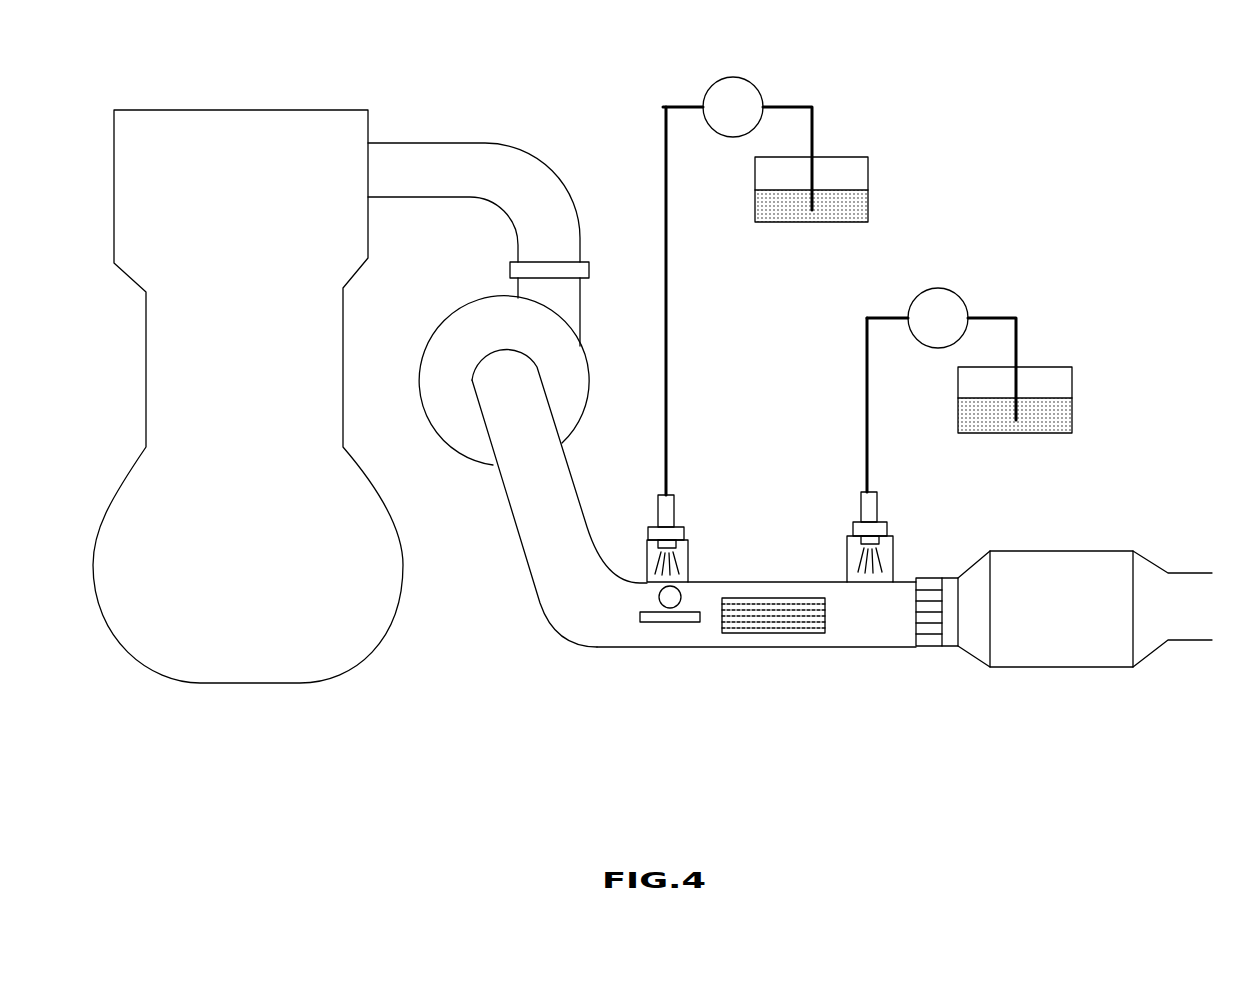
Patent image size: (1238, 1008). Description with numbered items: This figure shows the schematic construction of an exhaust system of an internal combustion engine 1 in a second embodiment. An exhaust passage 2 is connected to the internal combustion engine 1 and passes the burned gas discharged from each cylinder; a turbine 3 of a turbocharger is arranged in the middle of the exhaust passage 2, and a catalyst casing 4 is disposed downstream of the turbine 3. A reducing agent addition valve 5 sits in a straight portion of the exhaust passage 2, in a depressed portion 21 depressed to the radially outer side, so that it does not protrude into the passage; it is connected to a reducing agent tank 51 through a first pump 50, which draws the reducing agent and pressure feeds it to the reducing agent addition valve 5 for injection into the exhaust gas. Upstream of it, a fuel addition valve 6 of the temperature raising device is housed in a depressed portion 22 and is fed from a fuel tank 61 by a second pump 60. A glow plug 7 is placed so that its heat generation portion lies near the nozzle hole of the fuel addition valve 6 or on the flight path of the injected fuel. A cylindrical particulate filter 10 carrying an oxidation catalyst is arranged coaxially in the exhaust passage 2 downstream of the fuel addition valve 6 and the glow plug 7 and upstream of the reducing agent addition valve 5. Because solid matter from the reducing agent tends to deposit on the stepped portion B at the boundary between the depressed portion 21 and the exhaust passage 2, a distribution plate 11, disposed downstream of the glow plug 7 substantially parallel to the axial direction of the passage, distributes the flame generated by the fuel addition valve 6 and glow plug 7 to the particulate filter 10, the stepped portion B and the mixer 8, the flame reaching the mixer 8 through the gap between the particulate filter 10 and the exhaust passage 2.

The internal combustion engine 1 is at (243, 111).
The exhaust passage 2 is at (512, 148).
The turbine 3 is at (467, 312).
The catalyst casing 4 is at (1070, 667).
The reducing agent addition valve 5 is at (875, 505).
The fuel addition valve 6 is at (672, 505).
The glow plug 7 is at (662, 598).
The mixer 8 is at (932, 647).
The particulate filter 10 is at (775, 633).
The distribution plate 11 is at (668, 622).
The depressed portion 21 is at (893, 560).
The depressed portion 22 is at (688, 558).
The first pump 50 is at (948, 290).
The reducing agent tank 51 is at (1072, 388).
The second pump 60 is at (745, 82).
The fuel tank 61 is at (868, 177).
The stepped portion B is at (852, 588).